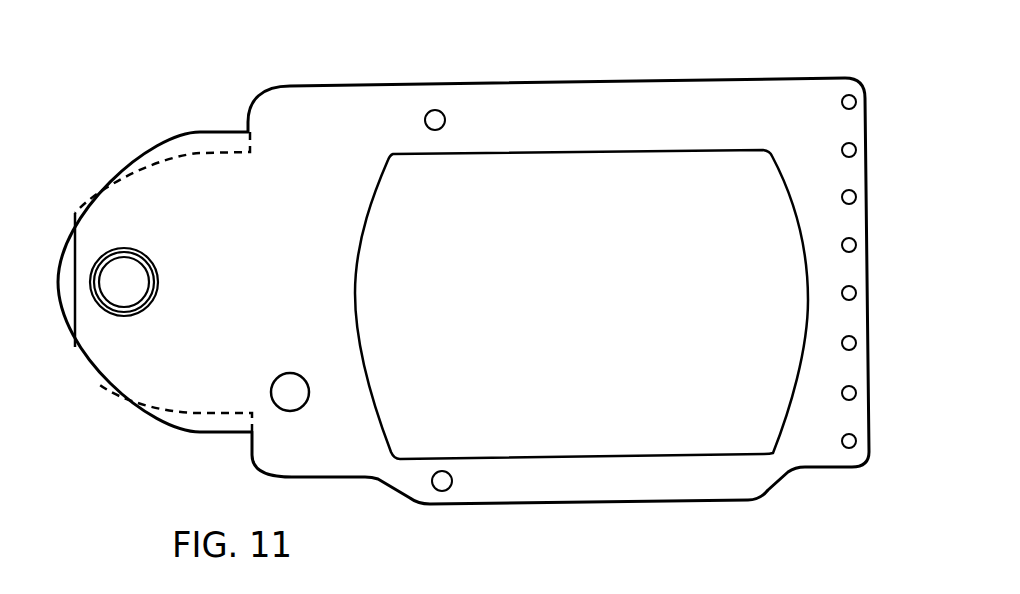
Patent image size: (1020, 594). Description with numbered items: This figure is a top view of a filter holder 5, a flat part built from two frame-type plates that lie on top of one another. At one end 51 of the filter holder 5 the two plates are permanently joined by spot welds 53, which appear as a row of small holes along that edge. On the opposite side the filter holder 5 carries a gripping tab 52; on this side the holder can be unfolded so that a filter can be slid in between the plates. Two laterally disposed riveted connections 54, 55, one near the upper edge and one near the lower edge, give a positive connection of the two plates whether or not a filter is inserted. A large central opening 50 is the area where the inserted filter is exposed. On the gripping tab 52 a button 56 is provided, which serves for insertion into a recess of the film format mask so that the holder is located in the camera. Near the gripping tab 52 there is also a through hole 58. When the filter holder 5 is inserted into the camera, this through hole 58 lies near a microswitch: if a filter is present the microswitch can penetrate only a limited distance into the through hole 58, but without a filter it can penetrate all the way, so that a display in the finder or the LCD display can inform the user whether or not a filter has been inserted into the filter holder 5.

The filter holder 5 is at (623, 92).
The window opening 50 is at (665, 437).
The end 51 is at (856, 243).
The gripping tab 52 is at (138, 380).
The spot welds 53 is at (857, 345).
The riveted connection 54 is at (433, 112).
The riveted connection 55 is at (446, 490).
The button 56 is at (117, 287).
The through hole 58 is at (277, 397).